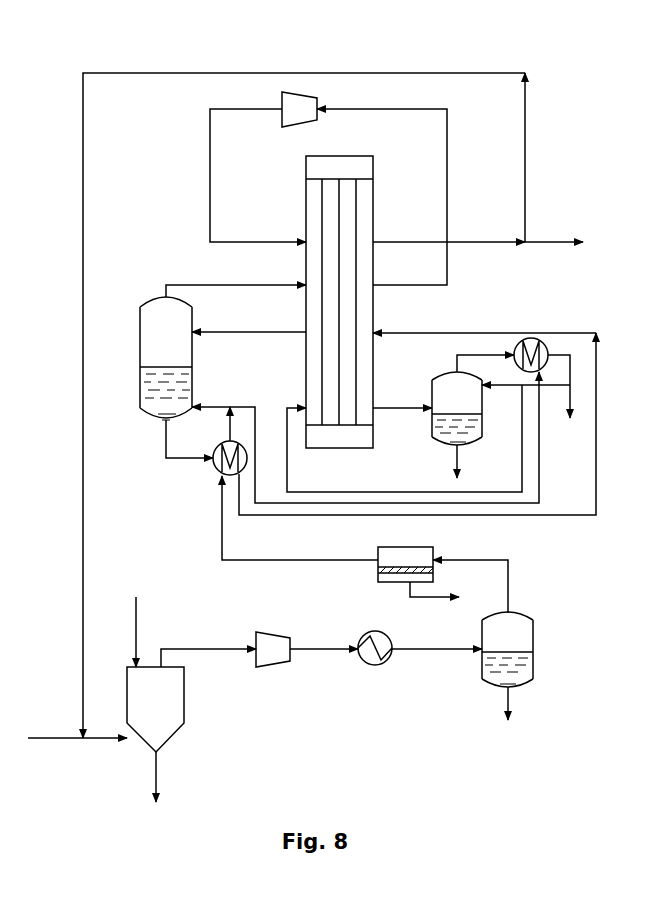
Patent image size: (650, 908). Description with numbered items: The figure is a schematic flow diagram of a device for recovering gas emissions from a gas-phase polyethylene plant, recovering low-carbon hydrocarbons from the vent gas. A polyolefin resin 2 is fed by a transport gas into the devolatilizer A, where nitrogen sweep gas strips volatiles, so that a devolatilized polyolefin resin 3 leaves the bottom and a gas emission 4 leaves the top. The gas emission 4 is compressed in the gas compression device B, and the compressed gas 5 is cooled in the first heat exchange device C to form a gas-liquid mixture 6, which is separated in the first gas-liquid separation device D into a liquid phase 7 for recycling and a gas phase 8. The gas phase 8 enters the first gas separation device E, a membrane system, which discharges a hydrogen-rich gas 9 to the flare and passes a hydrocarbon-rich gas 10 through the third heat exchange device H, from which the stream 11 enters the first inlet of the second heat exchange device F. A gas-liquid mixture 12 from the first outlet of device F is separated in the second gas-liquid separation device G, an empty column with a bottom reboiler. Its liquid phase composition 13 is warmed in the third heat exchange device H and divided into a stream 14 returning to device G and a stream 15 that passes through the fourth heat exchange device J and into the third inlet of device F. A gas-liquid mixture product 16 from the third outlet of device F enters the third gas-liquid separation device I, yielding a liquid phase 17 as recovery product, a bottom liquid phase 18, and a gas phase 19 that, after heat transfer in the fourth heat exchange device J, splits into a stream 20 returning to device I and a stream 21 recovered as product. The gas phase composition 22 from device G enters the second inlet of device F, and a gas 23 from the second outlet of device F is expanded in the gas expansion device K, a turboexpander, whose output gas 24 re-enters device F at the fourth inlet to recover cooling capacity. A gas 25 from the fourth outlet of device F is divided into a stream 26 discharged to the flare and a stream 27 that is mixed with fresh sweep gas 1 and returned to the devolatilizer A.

The fresh sweep gas 1 is at (72, 738).
The polyolefin resin 2 is at (136, 612).
The polyolefin resin 3 is at (156, 790).
The gas emission 4 is at (212, 649).
The compressed stream 5 is at (338, 649).
The gas-liquid mixture 6 is at (455, 649).
The liquid phase 7 is at (508, 716).
The gas phase 8 is at (484, 561).
The gas rich in small molecular substances 9 is at (428, 597).
The gas rich in hydrocarbons 10 is at (222, 526).
The recycle stream to column 11 is at (494, 332).
The gas-liquid mixture 12 is at (292, 332).
The liquid phase composition 13 is at (178, 460).
The stream 14 is at (224, 407).
The stream 15 is at (247, 407).
The gas-liquid mixture phase product 16 is at (380, 491).
The liquid phase 17 is at (410, 408).
The liquid phase 18 is at (452, 475).
The gas phase 19 is at (457, 362).
The stream 20 is at (517, 385).
The stream 21 is at (570, 390).
The gas phase composition 22 is at (276, 285).
The gas 23 is at (432, 285).
The gas 24 is at (276, 242).
The gas 25 is at (495, 242).
The stream 26 is at (571, 242).
The stream 27 is at (348, 72).
The devolatilizer A is at (184, 700).
The gas compression device B is at (272, 632).
The first heat exchange device C is at (366, 632).
The first gas-liquid separation device D is at (533, 640).
The first gas separation device E is at (400, 547).
The second heat exchange device F is at (373, 203).
The second gas-liquid separation device G is at (140, 340).
The third heat exchange device H is at (219, 470).
The third gas-liquid separation device I is at (480, 440).
The fourth heat exchange device J is at (537, 337).
The gas expansion device K is at (300, 127).